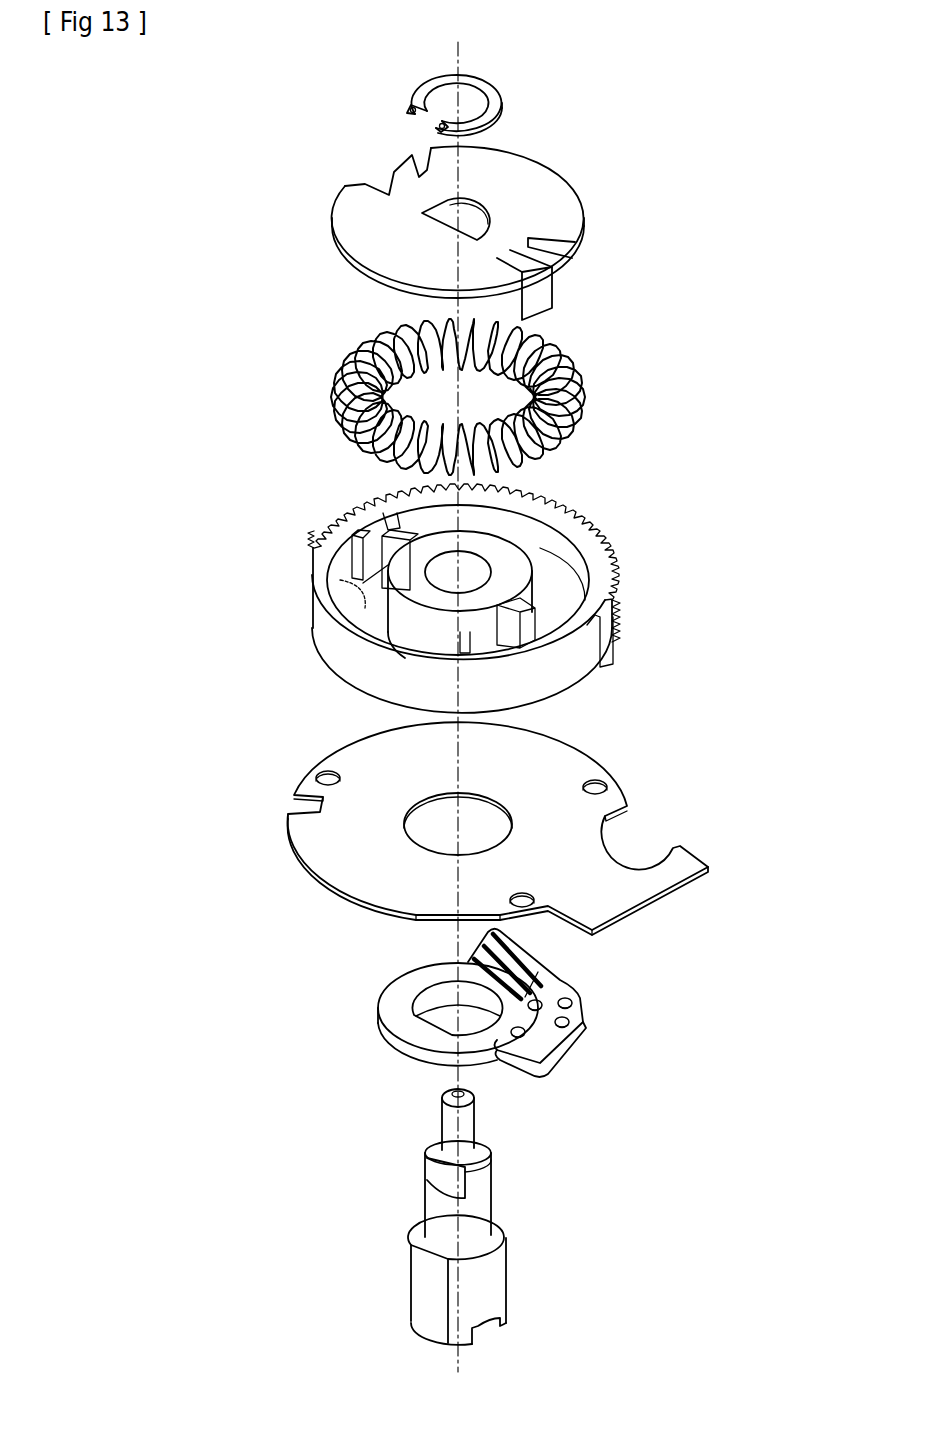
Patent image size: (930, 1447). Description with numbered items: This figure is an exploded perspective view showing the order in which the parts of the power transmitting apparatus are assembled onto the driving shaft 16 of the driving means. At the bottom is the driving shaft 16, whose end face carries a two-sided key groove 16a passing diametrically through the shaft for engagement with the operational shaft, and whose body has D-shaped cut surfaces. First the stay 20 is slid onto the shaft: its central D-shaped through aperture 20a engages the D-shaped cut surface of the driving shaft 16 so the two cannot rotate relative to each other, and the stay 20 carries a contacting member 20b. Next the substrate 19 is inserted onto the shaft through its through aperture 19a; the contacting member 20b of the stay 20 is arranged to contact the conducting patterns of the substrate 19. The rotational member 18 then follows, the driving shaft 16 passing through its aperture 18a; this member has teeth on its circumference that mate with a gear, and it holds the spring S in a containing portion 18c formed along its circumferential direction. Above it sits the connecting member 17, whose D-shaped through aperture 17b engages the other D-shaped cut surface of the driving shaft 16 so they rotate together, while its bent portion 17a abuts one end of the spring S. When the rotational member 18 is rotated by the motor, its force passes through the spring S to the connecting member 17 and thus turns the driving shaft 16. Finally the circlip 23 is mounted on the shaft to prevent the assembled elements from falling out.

The circlip 23 is at (503, 101).
The connecting member 17 is at (445, 220).
The bent portion 17a is at (556, 300).
The through aperture 17b is at (462, 206).
The spring S is at (332, 392).
The rotational member 18 is at (442, 598).
The aperture 18a is at (466, 568).
The containing portion 18c is at (365, 588).
The substrate 19 is at (457, 819).
The through aperture 19a is at (488, 818).
The stay 20 is at (485, 1003).
The through aperture 20a is at (440, 988).
The contacting member 20b is at (584, 1012).
The driving shaft 16 is at (478, 1217).
The key groove 16a is at (492, 1335).